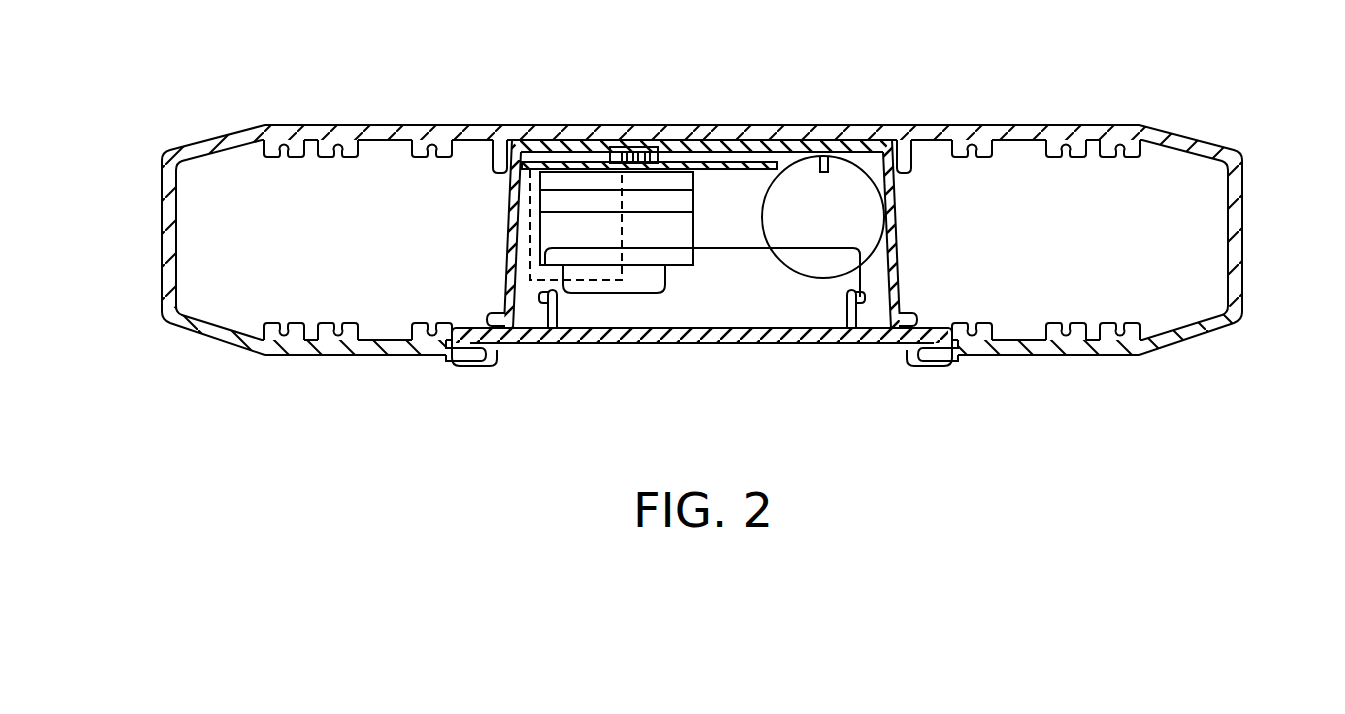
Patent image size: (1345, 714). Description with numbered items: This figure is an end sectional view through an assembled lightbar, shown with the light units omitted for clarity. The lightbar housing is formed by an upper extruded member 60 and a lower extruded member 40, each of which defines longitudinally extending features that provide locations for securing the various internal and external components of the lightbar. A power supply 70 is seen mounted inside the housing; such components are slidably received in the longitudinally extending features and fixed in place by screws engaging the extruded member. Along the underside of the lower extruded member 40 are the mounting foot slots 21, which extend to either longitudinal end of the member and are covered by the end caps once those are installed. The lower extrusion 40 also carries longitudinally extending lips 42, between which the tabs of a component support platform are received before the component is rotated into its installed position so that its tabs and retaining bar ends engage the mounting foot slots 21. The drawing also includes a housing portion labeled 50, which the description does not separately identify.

The housing 50 is at (375, 125).
The upper extruded member 60 is at (162, 247).
The power supply 70 is at (729, 204).
The lower extruded member 40 is at (743, 343).
The mounting foot slot 21 is at (497, 355).
The longitudinally extending lip 42 is at (466, 362).